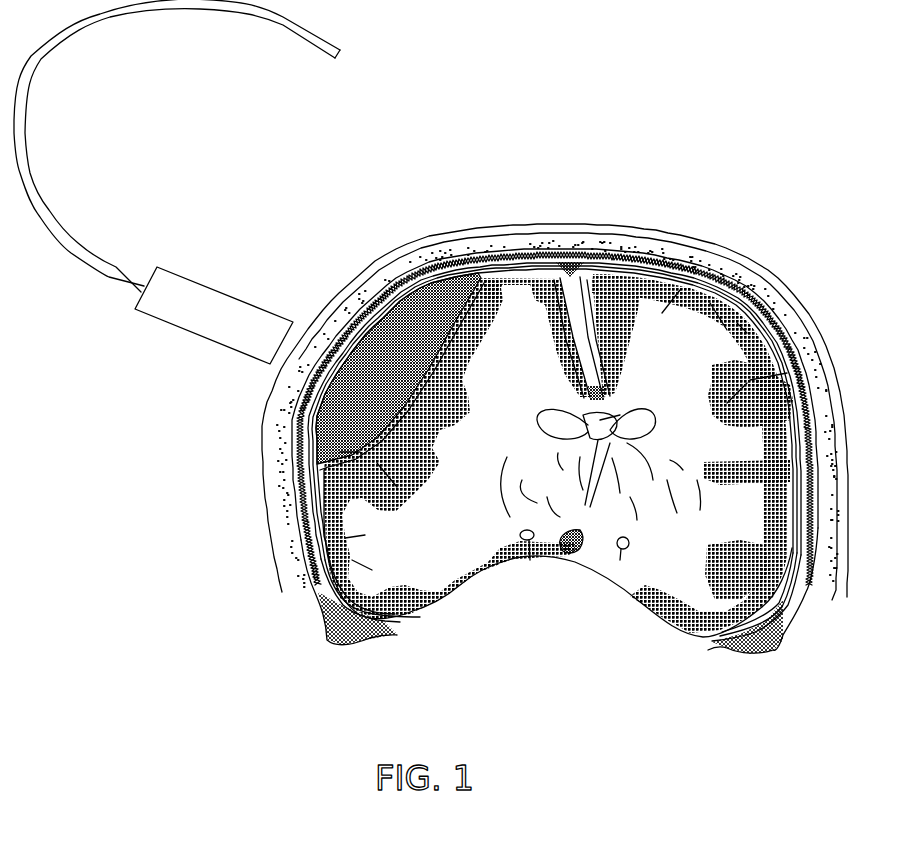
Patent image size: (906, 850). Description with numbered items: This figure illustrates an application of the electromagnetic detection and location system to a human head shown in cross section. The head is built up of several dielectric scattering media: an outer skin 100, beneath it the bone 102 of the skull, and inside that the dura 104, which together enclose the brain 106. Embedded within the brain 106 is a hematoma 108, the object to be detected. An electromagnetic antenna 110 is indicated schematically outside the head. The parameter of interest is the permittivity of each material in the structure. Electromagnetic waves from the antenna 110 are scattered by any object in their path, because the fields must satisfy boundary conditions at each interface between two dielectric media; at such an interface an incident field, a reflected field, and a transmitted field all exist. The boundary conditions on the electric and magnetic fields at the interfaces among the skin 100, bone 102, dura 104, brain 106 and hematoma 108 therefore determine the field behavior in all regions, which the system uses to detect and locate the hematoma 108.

The skin 100 is at (283, 536).
The bone 102 is at (298, 458).
The dura 104 is at (309, 427).
The brain 106 is at (520, 423).
The embedded hematoma 108 is at (455, 282).
The electromagnetic antenna 110 is at (155, 336).